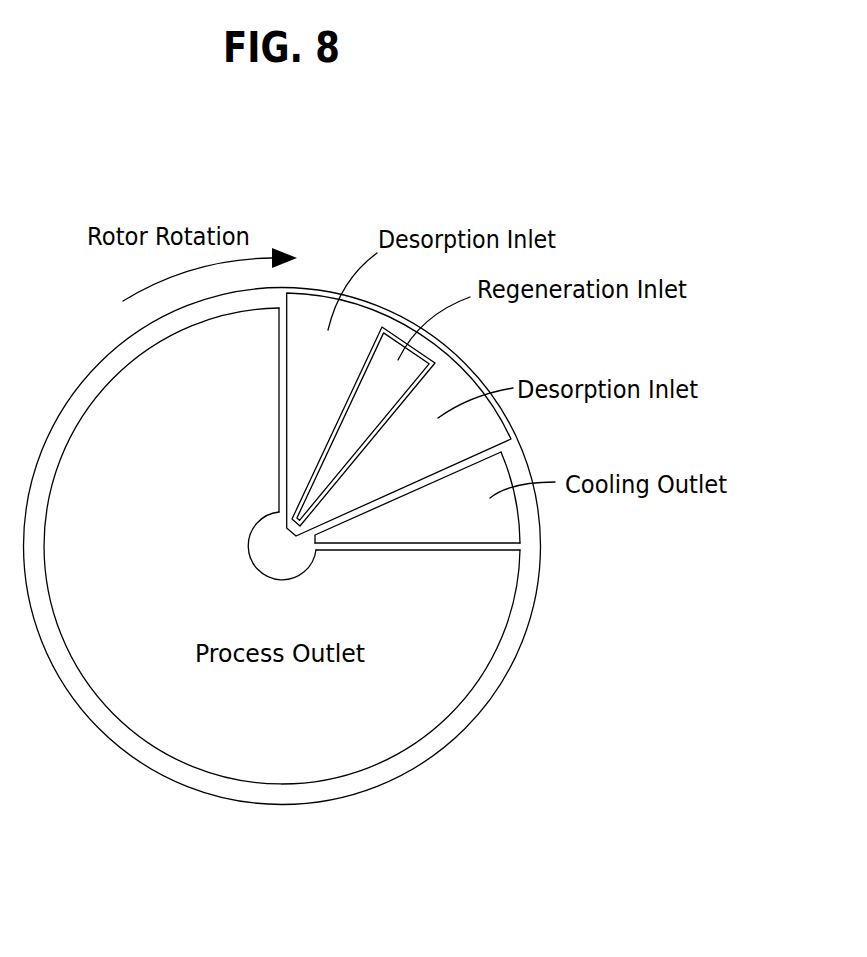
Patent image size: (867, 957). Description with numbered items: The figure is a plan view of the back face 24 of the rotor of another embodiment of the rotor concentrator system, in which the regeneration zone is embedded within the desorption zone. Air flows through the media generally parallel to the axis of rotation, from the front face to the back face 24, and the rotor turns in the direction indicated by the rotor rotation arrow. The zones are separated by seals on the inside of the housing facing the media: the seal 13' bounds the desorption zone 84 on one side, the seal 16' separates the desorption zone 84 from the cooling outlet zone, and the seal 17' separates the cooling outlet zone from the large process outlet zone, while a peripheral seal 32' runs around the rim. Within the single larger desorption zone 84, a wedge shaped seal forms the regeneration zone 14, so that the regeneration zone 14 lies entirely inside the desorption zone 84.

The seal 13' is at (233, 410).
The regeneration zone 14 is at (388, 358).
The desorption zone 84 is at (462, 383).
The seal 16' is at (454, 489).
The seal 17' is at (469, 563).
The back face 24 is at (450, 654).
The peripheral seal 32' is at (282, 546).